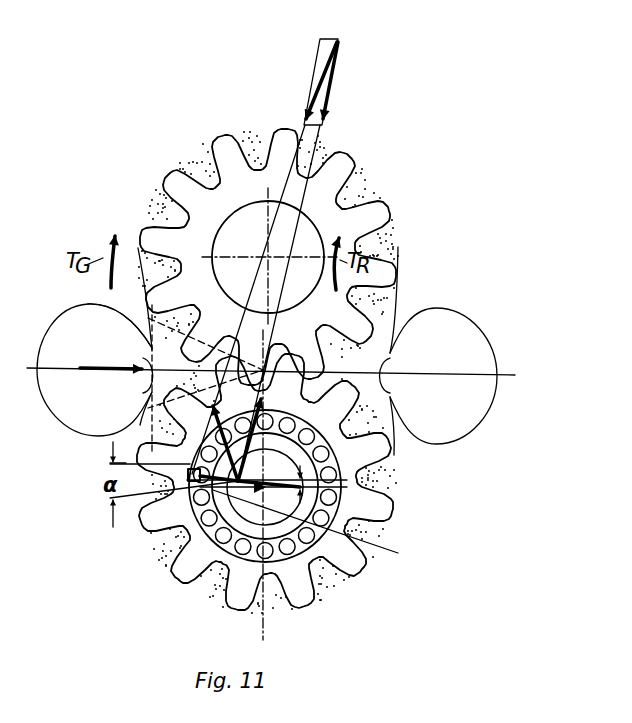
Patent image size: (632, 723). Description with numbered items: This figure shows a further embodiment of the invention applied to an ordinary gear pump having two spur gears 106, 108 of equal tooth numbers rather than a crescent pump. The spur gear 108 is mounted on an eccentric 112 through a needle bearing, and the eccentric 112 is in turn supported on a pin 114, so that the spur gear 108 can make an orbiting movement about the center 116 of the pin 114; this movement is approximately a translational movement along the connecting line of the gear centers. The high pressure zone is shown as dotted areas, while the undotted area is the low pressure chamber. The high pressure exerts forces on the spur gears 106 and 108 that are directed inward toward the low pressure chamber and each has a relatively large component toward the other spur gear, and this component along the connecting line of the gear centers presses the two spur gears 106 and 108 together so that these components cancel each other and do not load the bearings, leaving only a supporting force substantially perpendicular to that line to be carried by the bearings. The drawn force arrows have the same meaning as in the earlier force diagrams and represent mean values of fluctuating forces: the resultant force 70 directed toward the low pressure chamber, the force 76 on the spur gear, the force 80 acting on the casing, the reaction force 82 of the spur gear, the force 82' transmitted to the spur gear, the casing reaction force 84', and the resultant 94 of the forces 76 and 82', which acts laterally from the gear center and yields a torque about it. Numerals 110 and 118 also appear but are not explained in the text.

The resultant force 70 is at (192, 472).
The force on the spur gear 76 is at (325, 78).
The force on the casing 80 is at (106, 372).
The reaction force of the spur gear 82 is at (265, 481).
The force transmitted to the spur gear 82' is at (354, 80).
The reaction force on the casing 84' is at (325, 527).
The resultant force 94 is at (326, 37).
The spur gear 106 is at (372, 212).
The spur gear 108 is at (312, 588).
The rolling bearing 110 is at (222, 504).
The eccentric 112 is at (228, 498).
The pin 114 is at (260, 513).
The center of the pin 116 is at (272, 483).
The inlet flow arrow 118 is at (135, 366).